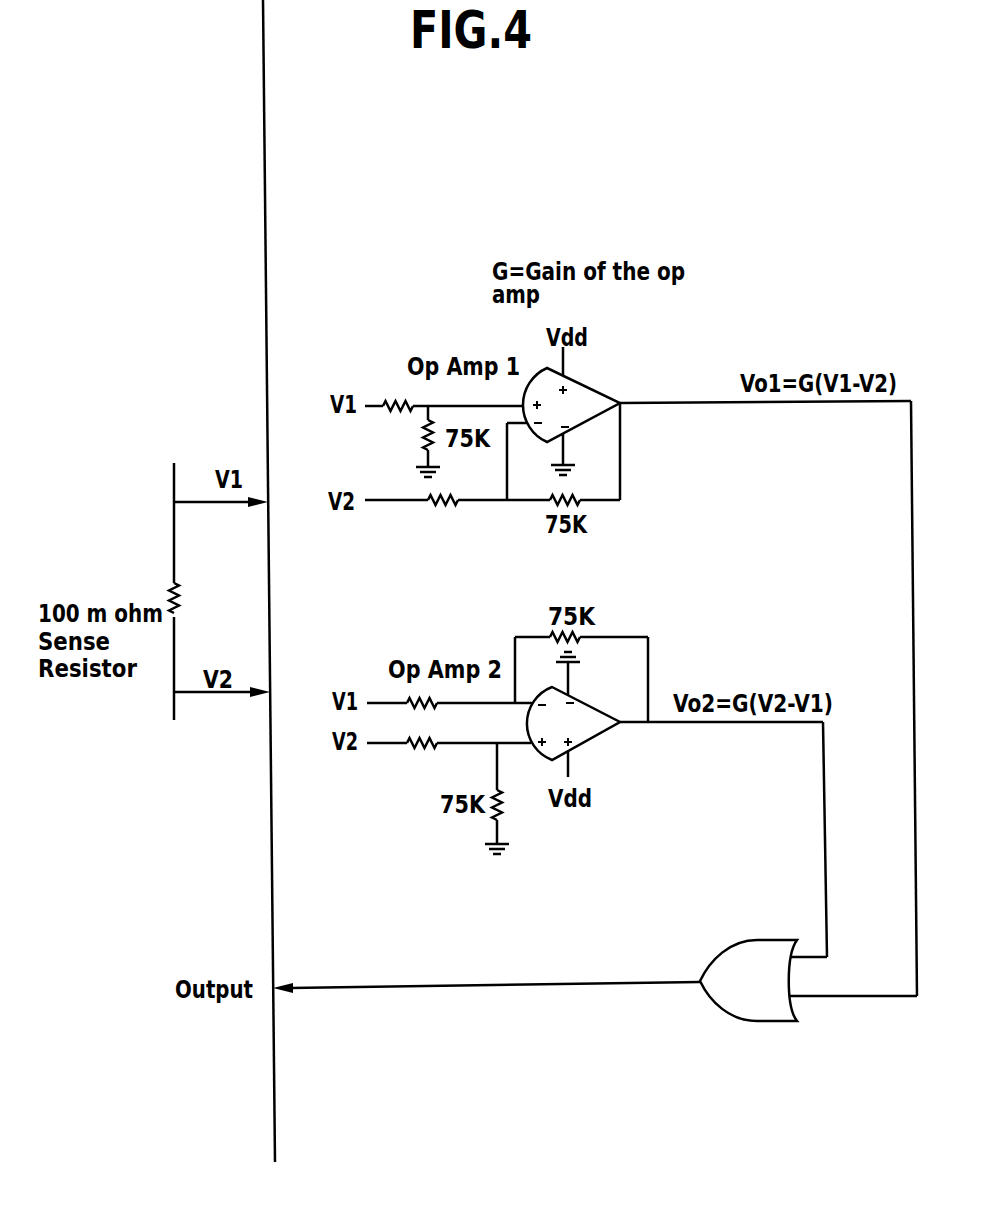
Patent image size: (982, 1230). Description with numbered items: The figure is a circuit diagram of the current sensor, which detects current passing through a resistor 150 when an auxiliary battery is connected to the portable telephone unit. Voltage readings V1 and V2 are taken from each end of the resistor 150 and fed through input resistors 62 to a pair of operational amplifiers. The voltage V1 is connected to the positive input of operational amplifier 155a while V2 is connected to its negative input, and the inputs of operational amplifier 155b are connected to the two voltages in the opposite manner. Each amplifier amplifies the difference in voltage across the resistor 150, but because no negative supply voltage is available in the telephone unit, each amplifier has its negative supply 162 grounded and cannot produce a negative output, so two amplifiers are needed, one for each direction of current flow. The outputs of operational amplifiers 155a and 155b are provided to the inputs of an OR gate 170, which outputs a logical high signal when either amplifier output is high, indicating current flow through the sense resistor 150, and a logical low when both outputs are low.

The resistor 150 is at (177, 588).
The input resistor 62 is at (448, 591).
The operational amplifier 155a is at (592, 393).
The operational amplifier 155b is at (587, 733).
The negative supply 162 is at (565, 443).
The OR gate 170 is at (725, 963).